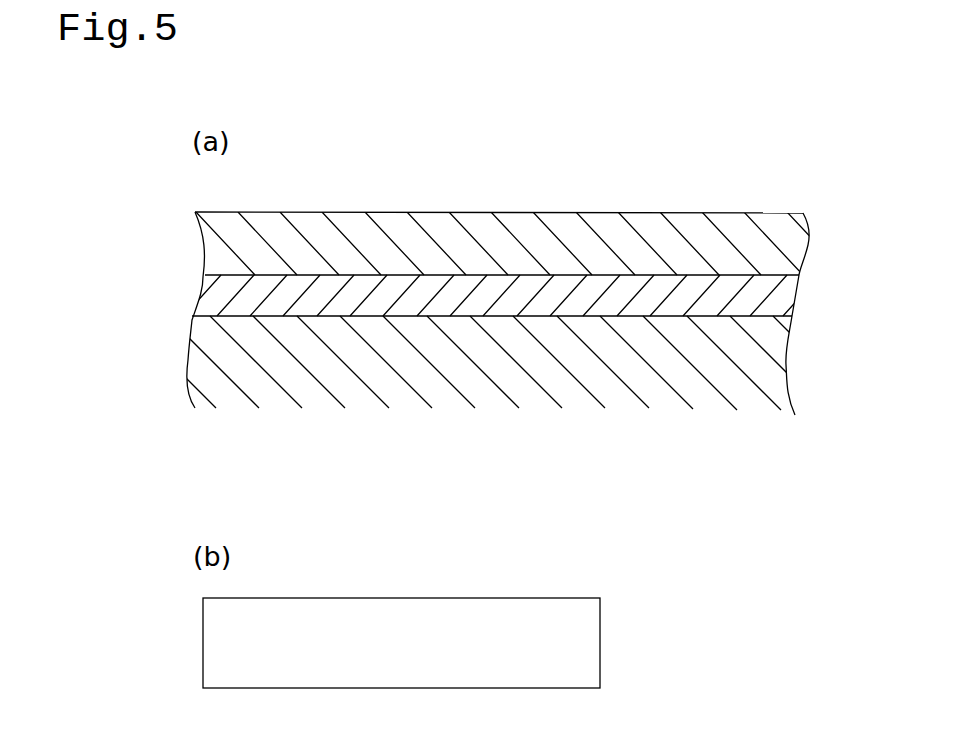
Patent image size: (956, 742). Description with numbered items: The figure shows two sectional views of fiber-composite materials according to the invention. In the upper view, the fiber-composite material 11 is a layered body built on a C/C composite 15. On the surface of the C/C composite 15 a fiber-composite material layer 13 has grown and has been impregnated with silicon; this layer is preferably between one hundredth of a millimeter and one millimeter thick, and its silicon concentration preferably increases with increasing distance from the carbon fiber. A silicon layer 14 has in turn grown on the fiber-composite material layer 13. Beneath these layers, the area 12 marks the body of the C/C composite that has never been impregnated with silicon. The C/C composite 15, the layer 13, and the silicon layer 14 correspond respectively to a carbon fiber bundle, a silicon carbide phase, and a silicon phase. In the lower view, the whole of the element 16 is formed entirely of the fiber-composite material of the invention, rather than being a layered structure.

The fiber-composite material 11 is at (745, 208).
The area of the body of C/C composite never impregnated with Si 12 is at (817, 280).
The fiber-composite material layer 13 is at (202, 298).
The silicon layer 14 is at (818, 213).
The C/C composite 15 is at (767, 380).
The fiber-composite material 16 is at (583, 650).